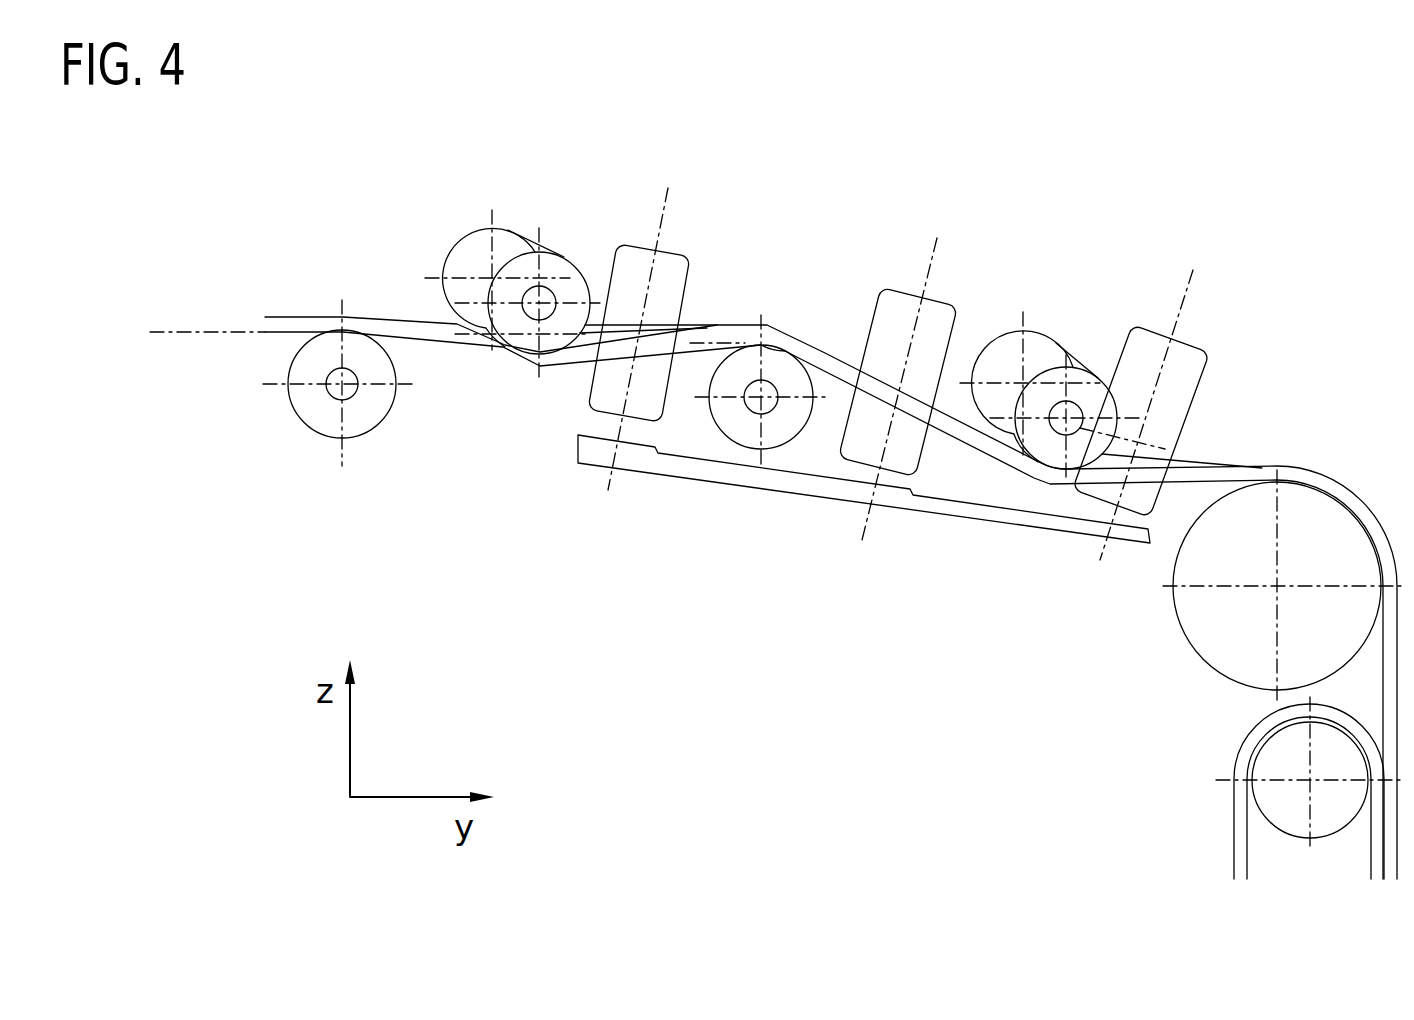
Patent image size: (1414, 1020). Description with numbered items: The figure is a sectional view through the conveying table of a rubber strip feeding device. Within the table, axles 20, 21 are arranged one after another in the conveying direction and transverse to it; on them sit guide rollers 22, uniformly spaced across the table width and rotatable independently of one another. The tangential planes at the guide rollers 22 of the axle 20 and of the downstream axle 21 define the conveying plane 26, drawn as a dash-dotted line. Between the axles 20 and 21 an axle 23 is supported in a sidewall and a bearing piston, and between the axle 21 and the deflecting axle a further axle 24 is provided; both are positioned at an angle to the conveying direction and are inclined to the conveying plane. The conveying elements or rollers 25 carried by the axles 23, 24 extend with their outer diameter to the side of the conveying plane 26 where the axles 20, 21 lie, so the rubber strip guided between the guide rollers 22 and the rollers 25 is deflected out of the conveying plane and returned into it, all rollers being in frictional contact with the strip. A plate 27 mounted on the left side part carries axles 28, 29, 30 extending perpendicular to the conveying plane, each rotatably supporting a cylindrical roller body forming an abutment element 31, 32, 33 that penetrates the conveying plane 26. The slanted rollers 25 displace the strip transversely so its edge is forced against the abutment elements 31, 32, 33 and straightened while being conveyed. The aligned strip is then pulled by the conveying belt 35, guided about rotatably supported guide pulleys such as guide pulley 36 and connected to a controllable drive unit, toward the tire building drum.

The axle 20 is at (338, 388).
The axle 21 is at (765, 400).
The guide rollers 22 is at (335, 423).
The axle 23 is at (550, 295).
The axle 24 is at (1060, 413).
The conveying elements (rollers) 25 is at (475, 243).
The conveying plane 26 is at (460, 330).
The plate 27 is at (835, 487).
The axle 28 is at (670, 212).
The axle 29 is at (935, 258).
The axle 30 is at (1185, 303).
The abutment element 31 is at (673, 270).
The abutment element 32 is at (938, 318).
The abutment element 33 is at (1175, 393).
The conveying belt 35 is at (1370, 844).
The guide pulley 36 is at (1264, 765).